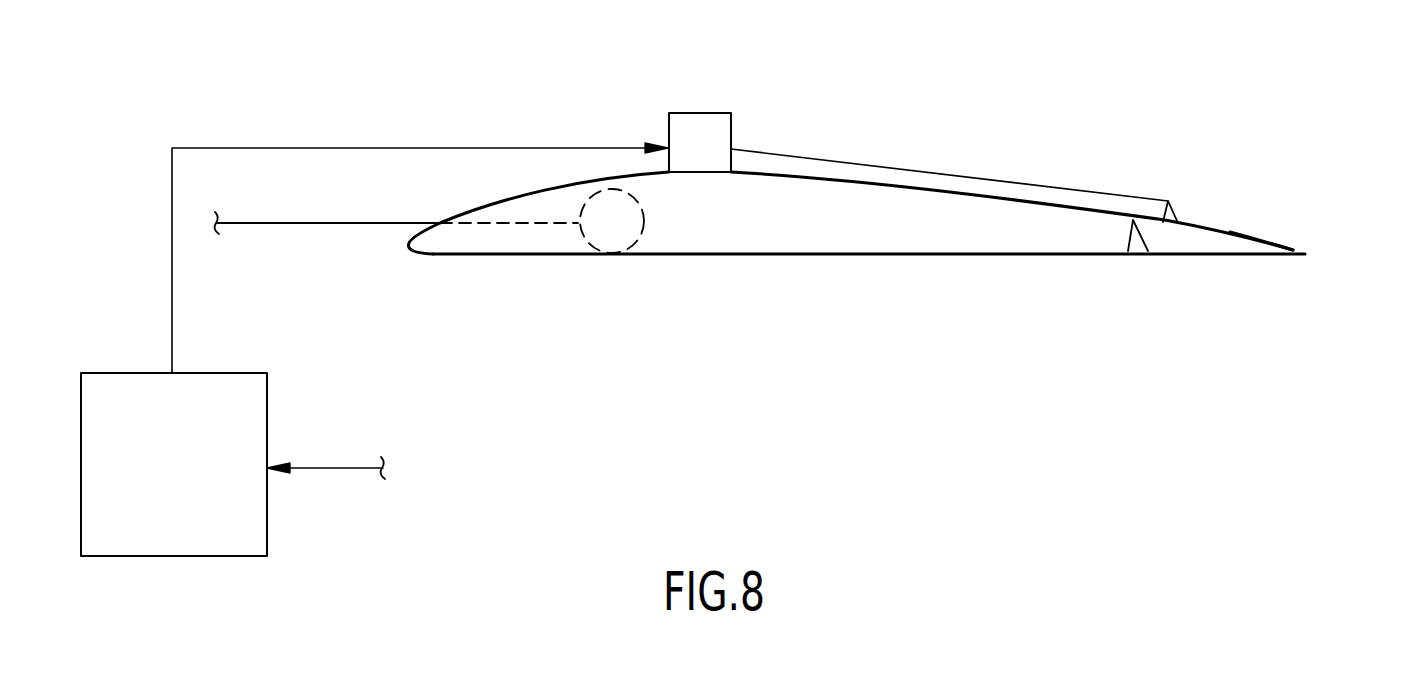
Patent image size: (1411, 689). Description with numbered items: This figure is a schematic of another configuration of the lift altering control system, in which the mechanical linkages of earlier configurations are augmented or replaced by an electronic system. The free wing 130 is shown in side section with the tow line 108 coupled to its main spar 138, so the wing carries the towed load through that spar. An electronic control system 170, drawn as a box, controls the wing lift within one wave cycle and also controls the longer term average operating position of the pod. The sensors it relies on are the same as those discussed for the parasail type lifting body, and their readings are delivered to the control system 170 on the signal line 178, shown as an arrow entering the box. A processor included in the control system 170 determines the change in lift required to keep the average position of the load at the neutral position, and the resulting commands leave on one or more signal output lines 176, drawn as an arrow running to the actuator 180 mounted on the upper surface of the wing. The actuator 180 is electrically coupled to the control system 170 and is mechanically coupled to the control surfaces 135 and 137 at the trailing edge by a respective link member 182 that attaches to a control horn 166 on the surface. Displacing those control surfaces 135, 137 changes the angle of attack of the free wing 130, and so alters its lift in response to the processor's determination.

The airfoil / wing section 130 is at (960, 129).
The link member 182 is at (788, 153).
The actuator 180 is at (693, 113).
The control horn 166 is at (1172, 208).
The control surface 135 is at (1290, 248).
The control surface 137 is at (1138, 235).
The signal output line 176 is at (332, 149).
The tow line 108 is at (300, 223).
The main spar 138 is at (585, 257).
The electronic control system 170 is at (198, 521).
The signal line 178 is at (325, 468).